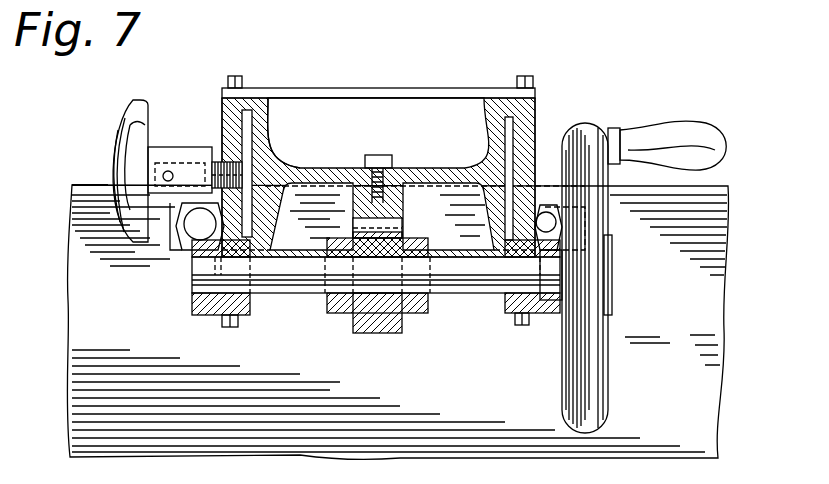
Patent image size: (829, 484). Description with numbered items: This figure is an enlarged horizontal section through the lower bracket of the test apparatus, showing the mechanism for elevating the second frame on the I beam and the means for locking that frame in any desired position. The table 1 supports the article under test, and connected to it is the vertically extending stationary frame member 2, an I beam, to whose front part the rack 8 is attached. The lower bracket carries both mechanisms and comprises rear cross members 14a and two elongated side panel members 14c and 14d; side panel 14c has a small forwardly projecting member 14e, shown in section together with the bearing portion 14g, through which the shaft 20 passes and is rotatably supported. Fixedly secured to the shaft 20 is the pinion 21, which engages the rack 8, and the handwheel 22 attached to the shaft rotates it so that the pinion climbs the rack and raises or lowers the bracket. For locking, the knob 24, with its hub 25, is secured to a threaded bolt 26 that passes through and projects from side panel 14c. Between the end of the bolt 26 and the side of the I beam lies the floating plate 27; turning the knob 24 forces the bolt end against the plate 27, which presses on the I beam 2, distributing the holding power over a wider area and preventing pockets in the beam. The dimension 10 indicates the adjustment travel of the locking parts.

The table 1 is at (712, 308).
The stationary frame member 2 is at (434, 170).
The rack 8 is at (403, 205).
The adjustment distance 10 is at (300, 183).
The rear cross members 14a is at (418, 97).
The side panel member 14c is at (223, 112).
The side panel member 14d is at (532, 122).
The forwardly projecting member 14e is at (252, 307).
The right bearing 14g is at (503, 318).
The shaft 20 is at (465, 284).
The pinion 21 is at (388, 317).
The handwheel 22 is at (597, 402).
The knob 24 is at (138, 143).
The knob 25 is at (150, 147).
The threaded bolt 26 is at (192, 162).
The floating plate 27 is at (267, 136).